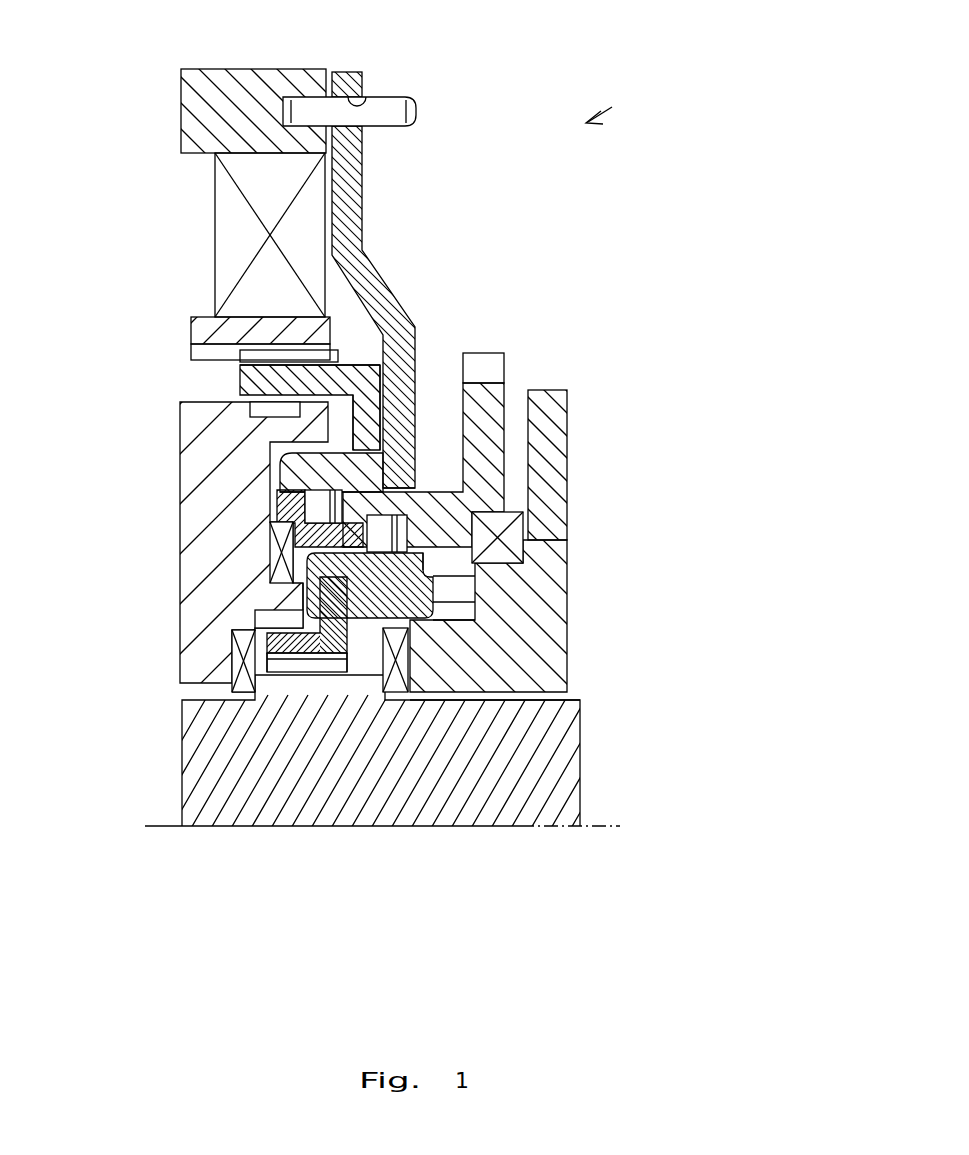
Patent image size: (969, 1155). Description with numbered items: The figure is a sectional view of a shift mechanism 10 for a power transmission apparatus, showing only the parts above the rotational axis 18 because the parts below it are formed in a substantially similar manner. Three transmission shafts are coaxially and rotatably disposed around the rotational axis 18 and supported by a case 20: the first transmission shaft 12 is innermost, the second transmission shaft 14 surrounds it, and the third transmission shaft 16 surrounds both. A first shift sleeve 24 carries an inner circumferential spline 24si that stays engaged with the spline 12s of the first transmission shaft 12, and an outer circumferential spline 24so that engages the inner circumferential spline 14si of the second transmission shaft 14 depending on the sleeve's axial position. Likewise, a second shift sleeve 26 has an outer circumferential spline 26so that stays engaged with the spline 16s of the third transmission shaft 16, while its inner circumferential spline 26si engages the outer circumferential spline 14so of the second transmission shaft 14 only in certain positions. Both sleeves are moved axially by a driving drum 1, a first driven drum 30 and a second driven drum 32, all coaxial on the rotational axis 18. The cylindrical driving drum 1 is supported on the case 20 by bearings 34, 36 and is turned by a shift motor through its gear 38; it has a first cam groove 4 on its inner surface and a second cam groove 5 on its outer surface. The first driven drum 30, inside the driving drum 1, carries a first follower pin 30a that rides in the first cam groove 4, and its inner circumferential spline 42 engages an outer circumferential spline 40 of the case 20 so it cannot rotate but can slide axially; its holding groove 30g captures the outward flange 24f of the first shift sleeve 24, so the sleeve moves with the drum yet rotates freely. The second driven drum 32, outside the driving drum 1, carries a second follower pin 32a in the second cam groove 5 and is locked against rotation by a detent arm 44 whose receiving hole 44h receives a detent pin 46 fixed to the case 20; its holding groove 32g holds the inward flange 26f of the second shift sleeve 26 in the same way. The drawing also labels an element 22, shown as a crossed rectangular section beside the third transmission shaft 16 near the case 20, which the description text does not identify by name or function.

The driving drum 1 is at (565, 458).
The first cam groove 4 is at (540, 497).
The second cam groove 5 is at (320, 508).
The shift mechanism 10 is at (653, 87).
The first transmission shaft 12 is at (580, 762).
The spline 12s is at (578, 701).
The second transmission shaft 14 is at (193, 663).
The outer circumferential spline 14so is at (250, 405).
The inner circumferential spline 14si is at (300, 630).
The third transmission shaft 16 is at (191, 329).
The spline 16s is at (191, 352).
The rotational axis 18 is at (590, 826).
The case 20 is at (215, 70).
The coil 22 is at (215, 230).
The first shift sleeve 24 is at (318, 680).
The outer circumferential spline 24so is at (292, 690).
The inner circumferential spline 24si is at (335, 690).
The outward flange 24f is at (300, 603).
The second shift sleeve 26 is at (368, 368).
The outer circumferential spline 26so is at (335, 345).
The inner circumferential spline 26si is at (400, 355).
The inward flange 26f is at (352, 425).
The first driven drum 30 is at (468, 610).
The first follower pin 30a is at (430, 568).
The holding groove 30g is at (445, 586).
The second driven drum 32 is at (433, 490).
The second follower pin 32a is at (330, 468).
The holding groove 32g is at (400, 420).
The bearing 34 is at (500, 537).
The bearing 36 is at (282, 550).
The gear 38 is at (486, 353).
The outer circumferential spline 40 is at (415, 640).
The inner circumferential spline 42 is at (385, 665).
The detent arm 44 is at (365, 175).
The receiving hole 44h is at (358, 100).
The detent pin 46 is at (403, 100).